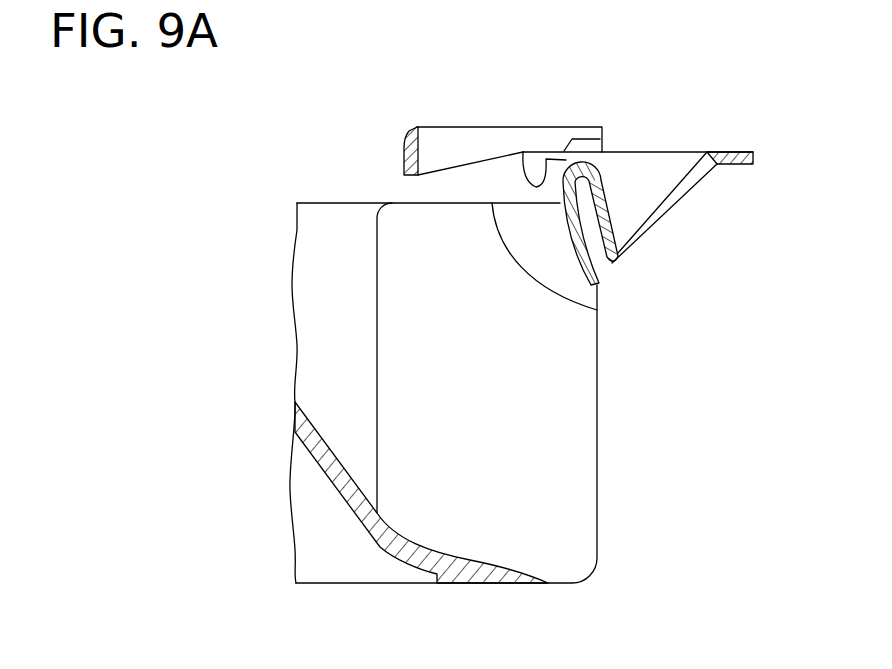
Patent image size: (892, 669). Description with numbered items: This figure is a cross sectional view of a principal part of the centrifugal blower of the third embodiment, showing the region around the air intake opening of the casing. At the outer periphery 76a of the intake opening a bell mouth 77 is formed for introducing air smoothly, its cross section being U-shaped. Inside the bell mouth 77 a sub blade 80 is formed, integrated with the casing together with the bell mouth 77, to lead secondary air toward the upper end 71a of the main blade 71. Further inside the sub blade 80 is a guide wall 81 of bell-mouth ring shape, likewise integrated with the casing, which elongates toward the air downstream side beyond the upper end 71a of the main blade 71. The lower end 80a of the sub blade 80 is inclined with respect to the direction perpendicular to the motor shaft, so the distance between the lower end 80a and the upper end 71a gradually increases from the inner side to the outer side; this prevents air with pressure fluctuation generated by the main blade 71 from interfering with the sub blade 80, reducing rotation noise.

The main blade 71 is at (597, 398).
The upper end of the blade 71a is at (597, 310).
The outer periphery of the intake opening 76a is at (521, 151).
The bell mouth 77 is at (537, 151).
The sub blade 80 is at (484, 126).
The lower end of the sub blade 80a is at (468, 166).
The guide wall 81 is at (406, 155).